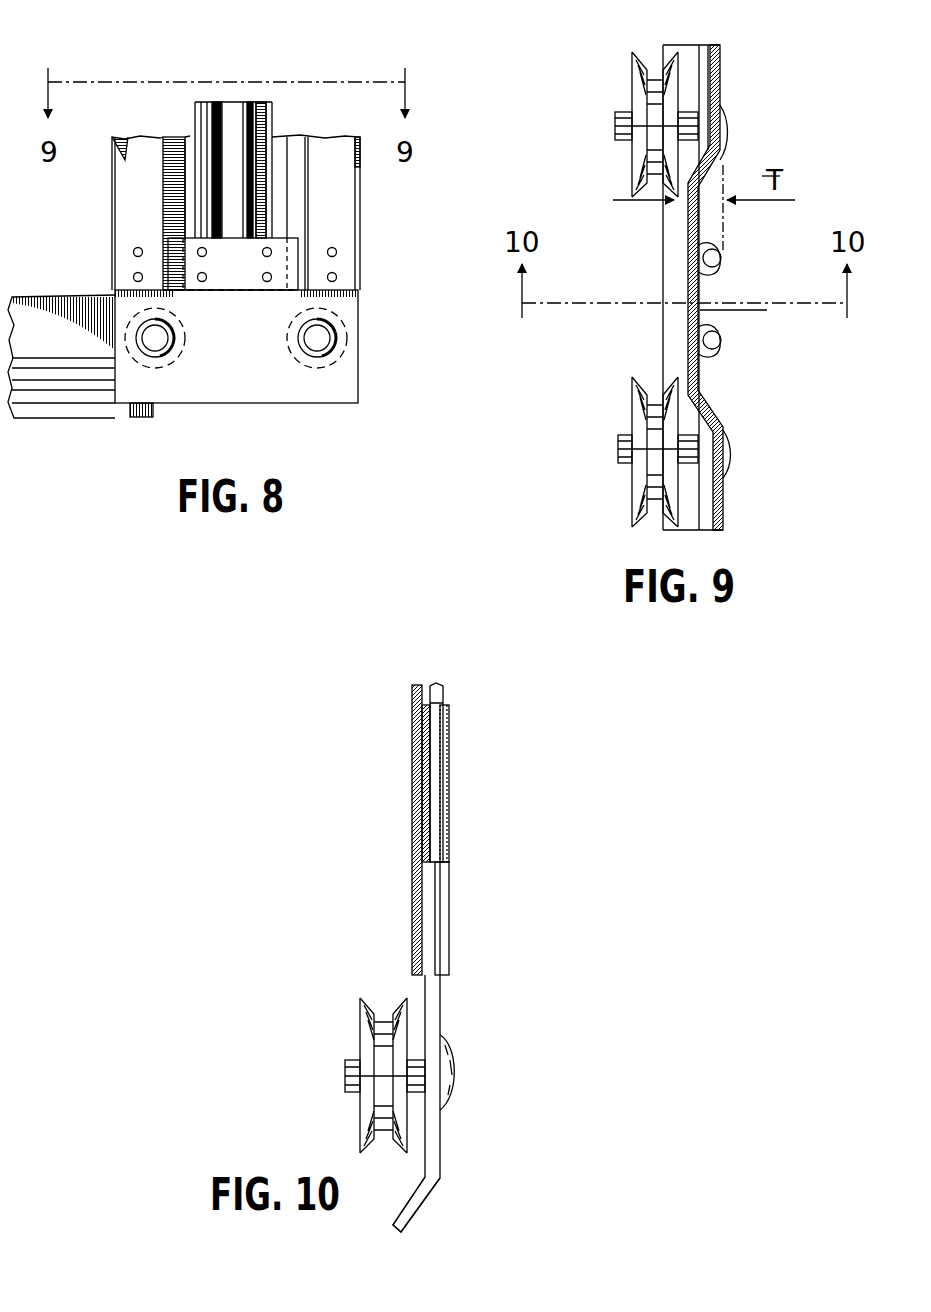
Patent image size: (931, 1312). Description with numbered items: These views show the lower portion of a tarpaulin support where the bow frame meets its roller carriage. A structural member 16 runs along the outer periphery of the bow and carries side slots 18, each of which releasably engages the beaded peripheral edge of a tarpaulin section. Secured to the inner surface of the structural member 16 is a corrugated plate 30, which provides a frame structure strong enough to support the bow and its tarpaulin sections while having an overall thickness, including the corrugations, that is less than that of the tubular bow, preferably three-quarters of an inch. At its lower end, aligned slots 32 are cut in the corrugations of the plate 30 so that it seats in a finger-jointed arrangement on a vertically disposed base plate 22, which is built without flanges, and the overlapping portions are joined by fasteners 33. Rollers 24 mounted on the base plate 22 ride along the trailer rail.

In FIG. 9, the structural member 16 is at (767, 310).
In FIG. 8, the side slot 18 is at (226, 113).
In FIG. 9, the side slot 18 is at (723, 258).
In FIG. 10, the side slot 18 is at (450, 750).
In FIG. 8, the base plate 22 is at (317, 393).
In FIG. 10, the base plate 22 is at (440, 1150).
In FIG. 8, the roller 24 is at (347, 327).
In FIG. 9, the roller 24 is at (635, 420).
In FIG. 10, the roller 24 is at (363, 1042).
In FIG. 8, the corrugated plate 30 is at (335, 206).
In FIG. 9, the corrugated plate 30 is at (720, 62).
In FIG. 10, the corrugated plate 30 is at (412, 912).
In FIG. 8, the slot 32 is at (300, 258).
In FIG. 8, the fastener 33 is at (133, 277).